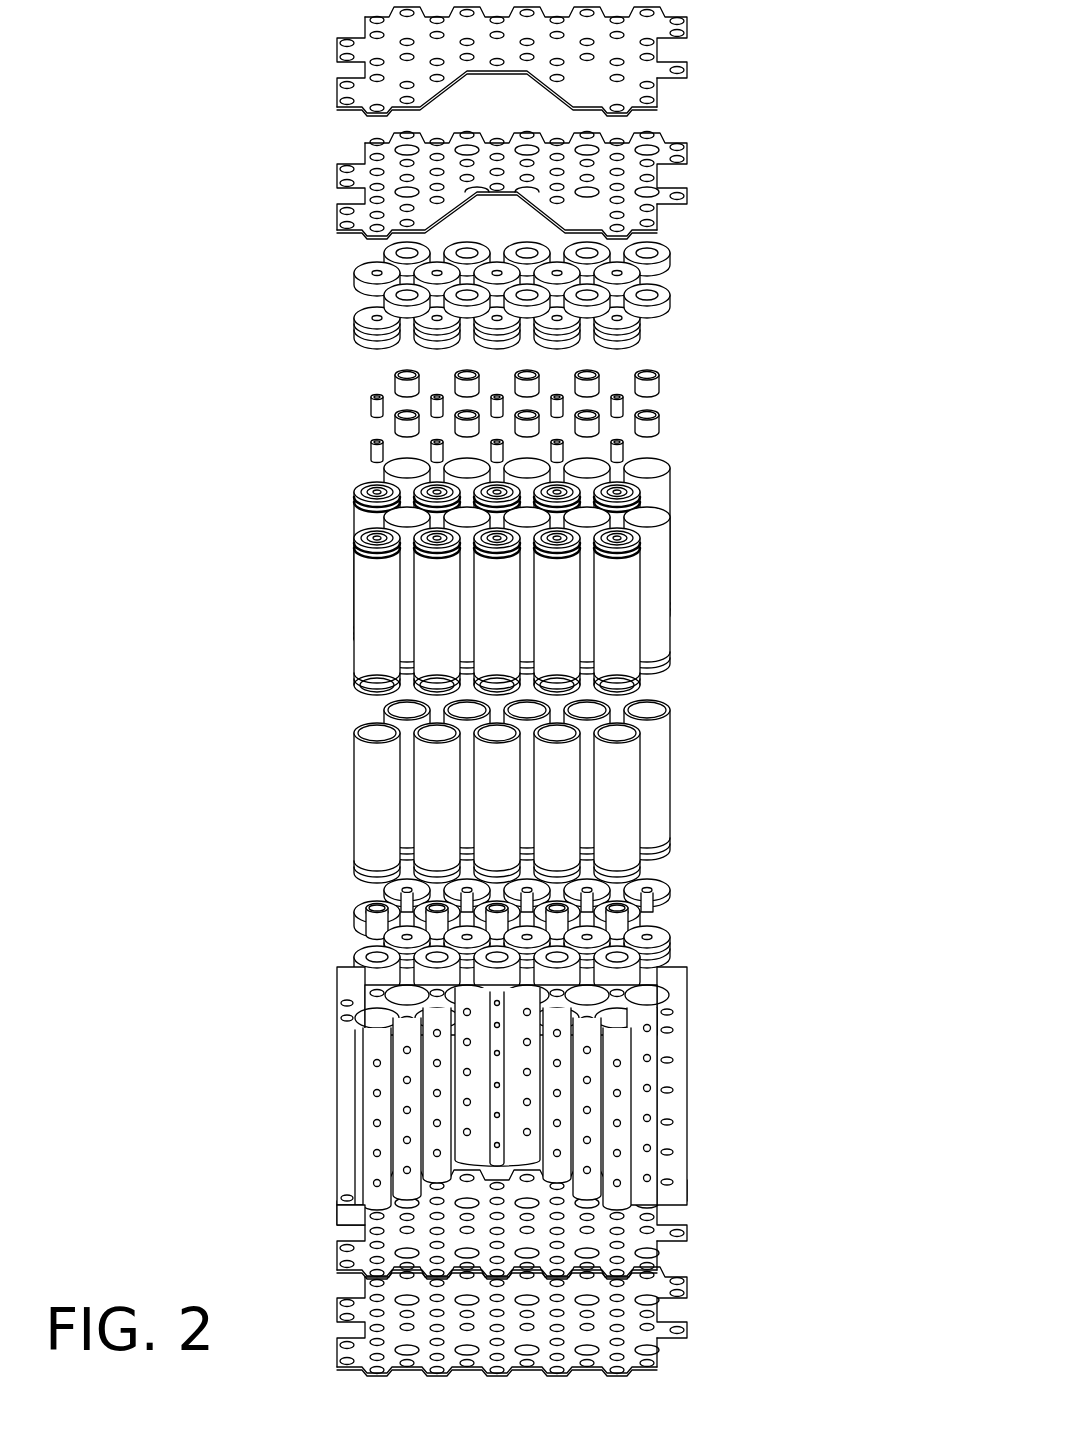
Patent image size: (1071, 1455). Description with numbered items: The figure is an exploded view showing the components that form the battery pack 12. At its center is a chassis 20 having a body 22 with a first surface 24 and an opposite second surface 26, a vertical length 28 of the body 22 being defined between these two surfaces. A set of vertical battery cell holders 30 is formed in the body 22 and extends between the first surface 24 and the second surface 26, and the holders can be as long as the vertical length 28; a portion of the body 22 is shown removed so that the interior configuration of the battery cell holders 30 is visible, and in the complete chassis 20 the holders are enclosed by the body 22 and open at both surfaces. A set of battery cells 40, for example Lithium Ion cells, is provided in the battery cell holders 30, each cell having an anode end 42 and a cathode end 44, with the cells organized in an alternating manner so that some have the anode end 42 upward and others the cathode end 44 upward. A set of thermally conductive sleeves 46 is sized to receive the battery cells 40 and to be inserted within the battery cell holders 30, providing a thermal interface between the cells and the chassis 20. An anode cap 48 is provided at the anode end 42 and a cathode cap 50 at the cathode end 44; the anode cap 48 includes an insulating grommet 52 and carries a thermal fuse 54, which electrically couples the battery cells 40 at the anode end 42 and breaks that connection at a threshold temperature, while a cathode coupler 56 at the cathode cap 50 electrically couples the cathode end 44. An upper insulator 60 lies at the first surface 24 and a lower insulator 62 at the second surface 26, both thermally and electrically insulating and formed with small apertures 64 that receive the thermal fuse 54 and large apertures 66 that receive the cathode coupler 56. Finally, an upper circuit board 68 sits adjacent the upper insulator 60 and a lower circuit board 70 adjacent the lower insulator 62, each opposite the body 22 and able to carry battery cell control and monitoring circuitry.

The battery pack 12 is at (168, 103).
The chassis 20 is at (497, 1090).
The body 22 is at (658, 1031).
The first surface 24 is at (355, 975).
The second surface 26 is at (348, 1219).
The vertical length 28 is at (497, 1091).
The vertical battery cell holders 30 is at (650, 1006).
The battery cells 40 is at (518, 576).
The anode end 42 is at (373, 513).
The cathode end 44 is at (650, 516).
The sleeves 46 is at (672, 768).
The anode cap 48 is at (652, 329).
The cathode cap 50 is at (513, 606).
The grommet 52 is at (362, 273).
The thermal fuse 54 is at (375, 442).
The cathode coupler 56 is at (407, 378).
The upper insulator 60 is at (513, 169).
The lower insulator 62 is at (668, 1235).
The small apertures 64 is at (618, 172).
The large apertures 66 is at (400, 146).
The upper circuit board 68 is at (702, 66).
The lower circuit board 70 is at (698, 1331).